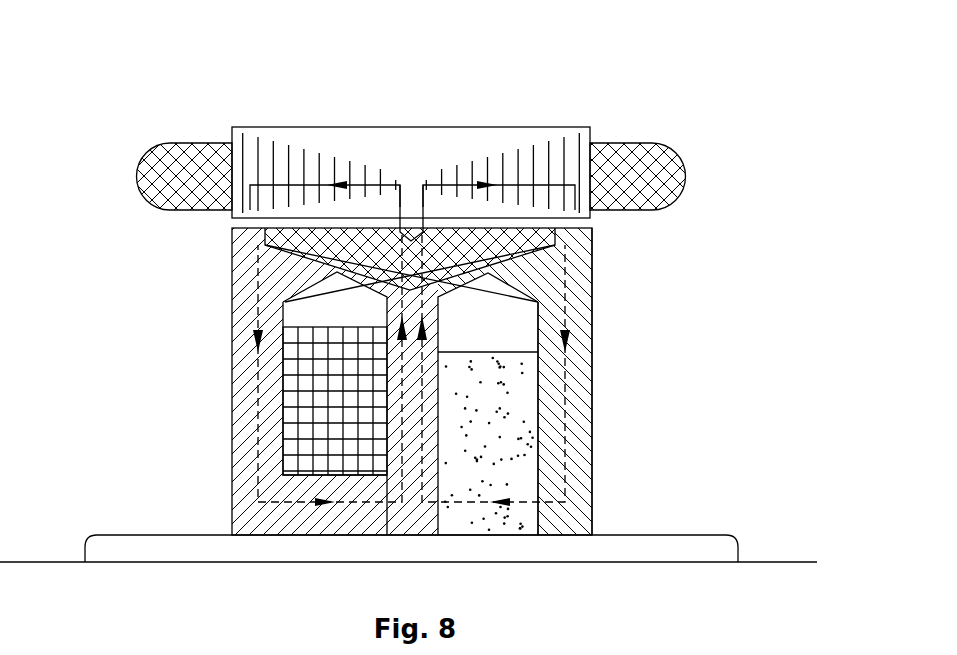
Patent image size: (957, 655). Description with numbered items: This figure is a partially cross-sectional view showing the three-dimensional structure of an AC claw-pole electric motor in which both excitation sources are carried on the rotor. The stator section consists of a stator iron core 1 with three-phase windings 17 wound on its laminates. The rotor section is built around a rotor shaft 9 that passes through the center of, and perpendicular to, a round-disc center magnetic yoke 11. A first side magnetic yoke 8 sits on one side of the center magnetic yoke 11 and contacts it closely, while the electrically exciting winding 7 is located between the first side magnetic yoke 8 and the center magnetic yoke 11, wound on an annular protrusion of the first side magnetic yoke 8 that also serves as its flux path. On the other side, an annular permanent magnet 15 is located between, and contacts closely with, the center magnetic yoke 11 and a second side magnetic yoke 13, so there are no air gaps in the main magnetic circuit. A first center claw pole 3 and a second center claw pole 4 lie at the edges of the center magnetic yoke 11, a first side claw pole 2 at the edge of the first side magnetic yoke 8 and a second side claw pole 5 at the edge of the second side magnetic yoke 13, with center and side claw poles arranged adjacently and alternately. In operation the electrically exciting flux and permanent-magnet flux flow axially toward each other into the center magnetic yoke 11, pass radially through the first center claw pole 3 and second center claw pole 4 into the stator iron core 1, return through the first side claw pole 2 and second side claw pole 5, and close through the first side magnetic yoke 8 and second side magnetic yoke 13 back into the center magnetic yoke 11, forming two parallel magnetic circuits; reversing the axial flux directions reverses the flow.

The stator iron core 1 is at (262, 164).
The first side claw pole 2 is at (404, 232).
The first center claw pole 3 is at (276, 237).
The second center claw pole 4 is at (548, 237).
The second side claw pole 5 is at (421, 232).
The electrically exciting winding 7 is at (317, 398).
The first side magnetic yoke 8 is at (248, 328).
The rotor shaft 9 is at (157, 553).
The center magnetic yoke 11 is at (412, 510).
The second side magnetic yoke 13 is at (576, 295).
The annular permanent magnet 15 is at (505, 440).
The three-phase windings 17 is at (197, 186).